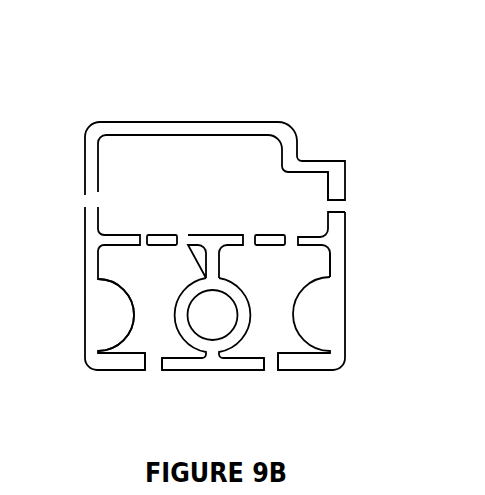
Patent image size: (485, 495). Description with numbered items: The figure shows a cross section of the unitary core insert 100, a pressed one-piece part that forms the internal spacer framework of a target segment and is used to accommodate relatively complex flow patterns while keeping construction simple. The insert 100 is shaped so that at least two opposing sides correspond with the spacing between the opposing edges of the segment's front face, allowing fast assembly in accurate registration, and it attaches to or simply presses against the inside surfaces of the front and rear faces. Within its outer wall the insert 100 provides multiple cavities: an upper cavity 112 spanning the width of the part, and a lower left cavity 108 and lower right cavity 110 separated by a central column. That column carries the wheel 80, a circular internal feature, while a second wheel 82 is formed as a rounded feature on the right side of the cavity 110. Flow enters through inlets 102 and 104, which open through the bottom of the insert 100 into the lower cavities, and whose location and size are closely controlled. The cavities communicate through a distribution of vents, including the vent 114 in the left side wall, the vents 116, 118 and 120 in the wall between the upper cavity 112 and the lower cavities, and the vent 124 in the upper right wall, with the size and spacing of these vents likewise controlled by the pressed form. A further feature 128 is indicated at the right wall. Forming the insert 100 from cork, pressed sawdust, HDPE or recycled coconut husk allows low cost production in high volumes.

The unitary core insert 100 is at (330, 108).
The vent 114 is at (88, 198).
The cavity 112 is at (207, 177).
The vent 116 is at (140, 233).
The vent 118 is at (183, 235).
The vent 120 is at (248, 232).
The vent 124 is at (337, 204).
The rib 128 is at (290, 239).
The wheel 82 is at (293, 322).
The cavity 108 is at (137, 287).
The cavity 110 is at (294, 285).
The wheel 80 is at (213, 317).
The inlet 102 is at (155, 373).
The inlet 104 is at (268, 373).